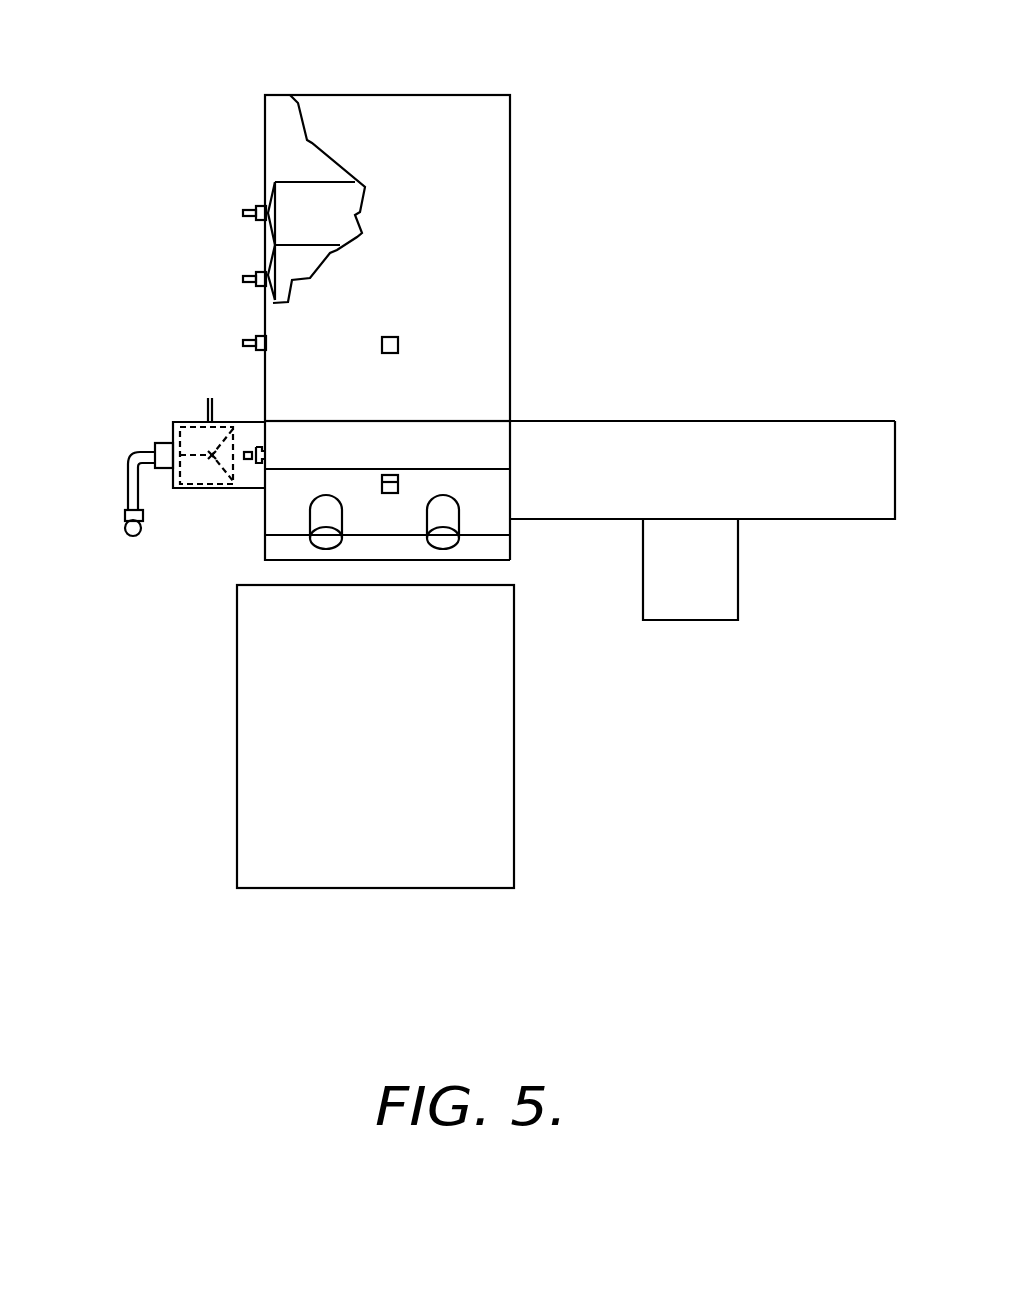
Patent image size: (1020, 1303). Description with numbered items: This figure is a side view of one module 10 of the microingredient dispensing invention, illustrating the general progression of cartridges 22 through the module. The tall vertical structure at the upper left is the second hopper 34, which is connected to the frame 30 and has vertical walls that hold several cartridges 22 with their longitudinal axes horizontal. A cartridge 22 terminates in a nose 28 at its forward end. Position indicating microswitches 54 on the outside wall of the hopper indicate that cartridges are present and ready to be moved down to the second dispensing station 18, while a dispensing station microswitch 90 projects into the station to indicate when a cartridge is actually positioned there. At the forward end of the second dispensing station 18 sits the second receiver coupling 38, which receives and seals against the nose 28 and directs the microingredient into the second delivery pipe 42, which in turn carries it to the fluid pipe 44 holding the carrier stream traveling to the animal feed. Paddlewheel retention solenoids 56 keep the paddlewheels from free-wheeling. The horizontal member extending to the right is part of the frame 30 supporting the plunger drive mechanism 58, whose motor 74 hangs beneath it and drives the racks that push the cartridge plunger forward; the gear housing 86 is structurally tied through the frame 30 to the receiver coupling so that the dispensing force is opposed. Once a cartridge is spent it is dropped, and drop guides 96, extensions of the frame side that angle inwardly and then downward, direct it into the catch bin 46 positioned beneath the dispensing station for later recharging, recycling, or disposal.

The module 10 is at (176, 78).
The second dispensing station 18 is at (234, 390).
The cartridge 22 is at (313, 198).
The nose 28 is at (243, 278).
The frame 30 is at (475, 445).
The second hopper 34 is at (510, 112).
The second receiver coupling 38 is at (183, 420).
The second delivery pipe 42 is at (128, 482).
The fluid pipe 44 is at (122, 545).
The catch bin 46 is at (514, 697).
The position indicating microswitch 54 is at (399, 342).
The paddlewheel retention solenoid 56 is at (450, 520).
The plunger drive mechanism 58 is at (815, 378).
The motor 74 is at (739, 588).
The gear housing 86 is at (797, 503).
The dispensing station microswitch 90 is at (400, 476).
The drop guide 96 is at (265, 548).